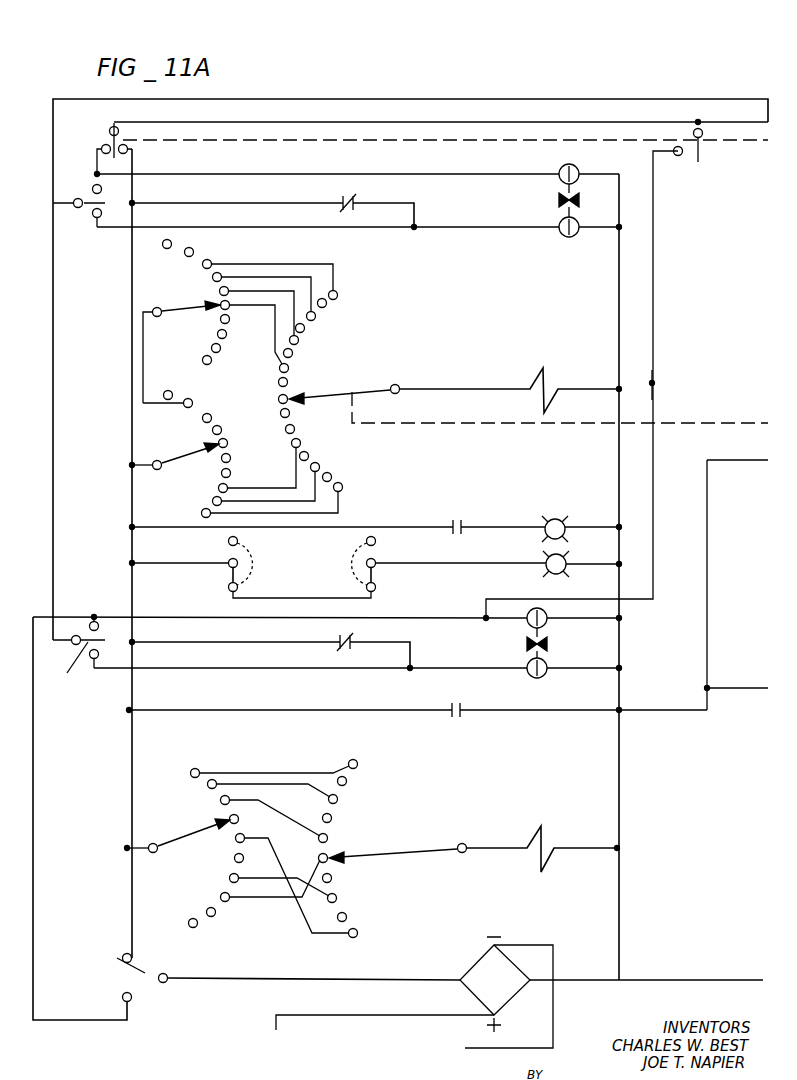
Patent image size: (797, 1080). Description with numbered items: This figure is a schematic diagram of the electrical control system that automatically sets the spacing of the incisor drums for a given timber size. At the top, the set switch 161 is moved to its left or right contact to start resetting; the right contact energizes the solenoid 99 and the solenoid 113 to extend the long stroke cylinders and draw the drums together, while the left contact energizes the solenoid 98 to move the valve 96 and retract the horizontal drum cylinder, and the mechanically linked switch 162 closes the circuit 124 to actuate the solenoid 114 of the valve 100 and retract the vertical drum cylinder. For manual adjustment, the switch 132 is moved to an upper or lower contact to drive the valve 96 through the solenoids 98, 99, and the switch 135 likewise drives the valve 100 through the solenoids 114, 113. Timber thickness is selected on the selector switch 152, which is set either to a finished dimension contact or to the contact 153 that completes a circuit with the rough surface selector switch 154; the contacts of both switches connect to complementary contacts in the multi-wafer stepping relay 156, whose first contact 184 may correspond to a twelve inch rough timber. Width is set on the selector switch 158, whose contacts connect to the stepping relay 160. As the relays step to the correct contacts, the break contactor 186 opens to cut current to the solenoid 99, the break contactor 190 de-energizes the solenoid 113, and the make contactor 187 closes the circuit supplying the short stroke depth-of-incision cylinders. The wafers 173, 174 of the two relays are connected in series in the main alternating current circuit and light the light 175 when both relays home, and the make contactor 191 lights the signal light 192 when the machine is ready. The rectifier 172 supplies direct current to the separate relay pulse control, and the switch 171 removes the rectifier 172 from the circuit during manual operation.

The set switch 161 is at (104, 134).
The switch 132 is at (93, 206).
The current strength break contactor 186 is at (345, 200).
The solenoid 98 is at (561, 166).
The valve 96 is at (557, 200).
The solenoid 99 is at (563, 236).
The switch 162 is at (698, 162).
The circuit 124 is at (652, 383).
The first contact 184 is at (337, 293).
The rough surface selector switch 154 is at (183, 310).
The contact 153 is at (196, 396).
The selector switch 152 is at (188, 458).
The multi-wafer stepping relay 156 is at (356, 392).
The make contactor 191 is at (458, 518).
The signal light 192 is at (552, 518).
The wafer 173 is at (229, 569).
The wafer 174 is at (373, 568).
The light 175 is at (546, 572).
The switch 135 is at (76, 656).
The break contactor 190 is at (342, 640).
The solenoid 114 is at (547, 624).
The valve 100 is at (526, 644).
The solenoid 113 is at (532, 678).
The make contactor 187 is at (457, 718).
The selector switch 158 is at (188, 833).
The stepping relay 160 is at (392, 852).
The switch 171 is at (145, 975).
The rectifier 172 is at (478, 962).